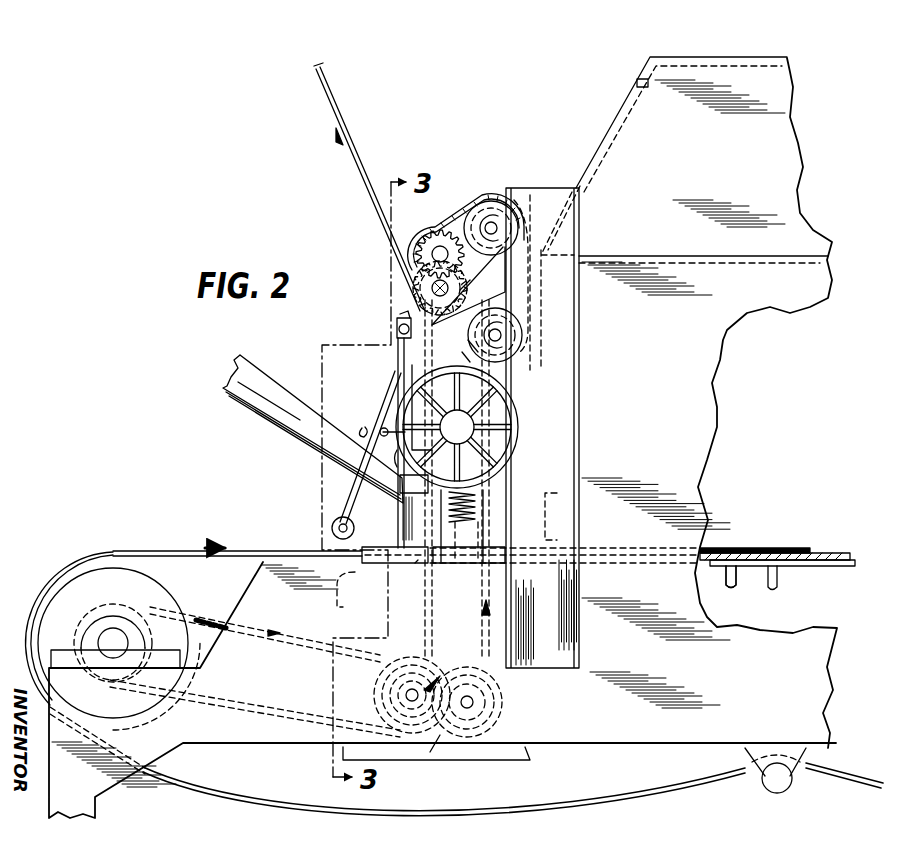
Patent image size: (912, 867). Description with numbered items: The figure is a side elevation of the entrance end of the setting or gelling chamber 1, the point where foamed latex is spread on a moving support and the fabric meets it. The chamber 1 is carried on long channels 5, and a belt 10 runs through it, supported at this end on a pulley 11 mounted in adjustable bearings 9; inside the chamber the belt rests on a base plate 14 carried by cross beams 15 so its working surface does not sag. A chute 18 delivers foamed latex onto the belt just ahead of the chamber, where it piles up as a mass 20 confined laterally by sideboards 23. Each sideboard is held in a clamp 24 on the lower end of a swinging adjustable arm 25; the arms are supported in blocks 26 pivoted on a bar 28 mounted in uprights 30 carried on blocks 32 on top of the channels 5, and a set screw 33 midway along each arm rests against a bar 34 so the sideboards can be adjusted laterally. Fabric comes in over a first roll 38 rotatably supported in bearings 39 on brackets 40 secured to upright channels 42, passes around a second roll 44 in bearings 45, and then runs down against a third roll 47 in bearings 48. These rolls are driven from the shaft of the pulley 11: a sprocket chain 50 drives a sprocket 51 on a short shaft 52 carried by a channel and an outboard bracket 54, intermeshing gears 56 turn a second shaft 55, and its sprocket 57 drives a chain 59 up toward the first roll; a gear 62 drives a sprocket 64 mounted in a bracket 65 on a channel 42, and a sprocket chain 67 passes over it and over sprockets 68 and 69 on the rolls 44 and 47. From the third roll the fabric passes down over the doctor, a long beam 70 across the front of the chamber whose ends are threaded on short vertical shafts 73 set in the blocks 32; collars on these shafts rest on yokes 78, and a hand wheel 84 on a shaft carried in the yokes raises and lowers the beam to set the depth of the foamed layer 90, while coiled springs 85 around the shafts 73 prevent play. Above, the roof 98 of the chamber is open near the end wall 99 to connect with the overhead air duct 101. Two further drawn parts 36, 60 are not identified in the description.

The setting or gelling chamber 1 is at (614, 105).
The long channels 5 is at (265, 745).
The adjustable bearings 9 is at (90, 628).
The setting belt 10 is at (150, 552).
The pulley 11 is at (176, 590).
The base plate 14 is at (812, 567).
The cross beams 15 is at (335, 606).
The chute 18 is at (274, 372).
The mass of foamed latex 20 is at (418, 561).
The sideboards 23 is at (395, 528).
The clamp 24 is at (332, 528).
The swinging adjustable arm 25 is at (347, 496).
The blocks 26 is at (398, 320).
The bar 28 is at (395, 336).
The uprights 30 is at (402, 370).
The blocks 32 is at (410, 476).
The set screw 33 is at (366, 424).
The bar 34 is at (457, 427).
The feed rod 36 is at (362, 180).
The first roll 38 is at (413, 288).
The bearings 39 is at (412, 270).
The brackets 40 is at (478, 290).
The upright channels 42 is at (538, 190).
The second roll 44 is at (480, 200).
The bearings 45 is at (491, 212).
The third roll 47 is at (464, 361).
The bearings 48 is at (504, 343).
The sprocket chain 50 is at (226, 606).
The second sprocket 51 is at (378, 683).
The short shaft 52 is at (404, 699).
The outboard bracket 54 is at (488, 735).
The second shaft 55 is at (498, 697).
The intermeshing gears 56 is at (437, 740).
The sprocket 57 is at (498, 712).
The chain 59 is at (430, 640).
The shaft 60 is at (420, 276).
The intermeshing gear 62 is at (428, 236).
The sprocket 64 is at (472, 282).
The bracket 65 is at (412, 252).
The sprocket chain 67 is at (446, 225).
The sprocket 68 is at (522, 216).
The sprocket 69 is at (470, 347).
The beam 70 is at (397, 535).
The short vertical shaft 73 is at (485, 553).
The yoke 78 is at (530, 446).
The hand wheel 84 is at (520, 404).
The coiled springs 85 is at (490, 500).
The foamed layer 90 is at (818, 550).
The roof 98 is at (826, 256).
The end wall 99 is at (596, 141).
The overhead duct 101 is at (795, 103).